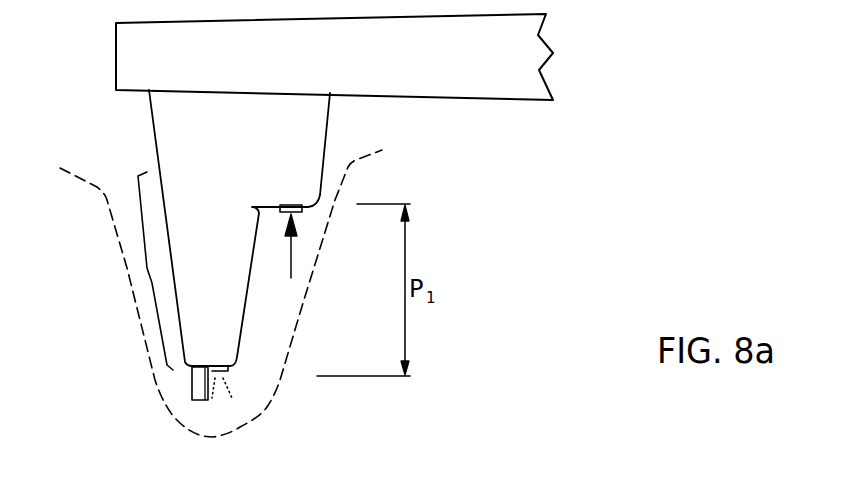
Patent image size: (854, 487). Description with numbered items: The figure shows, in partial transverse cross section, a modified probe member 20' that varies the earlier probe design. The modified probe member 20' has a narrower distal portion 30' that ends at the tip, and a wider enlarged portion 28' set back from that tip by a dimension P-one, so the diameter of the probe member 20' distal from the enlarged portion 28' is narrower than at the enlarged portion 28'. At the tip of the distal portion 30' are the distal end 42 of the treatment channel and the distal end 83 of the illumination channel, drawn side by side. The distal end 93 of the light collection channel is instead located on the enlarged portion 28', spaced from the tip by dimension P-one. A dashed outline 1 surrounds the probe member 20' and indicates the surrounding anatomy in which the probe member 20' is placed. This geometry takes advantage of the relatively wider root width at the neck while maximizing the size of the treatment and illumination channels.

The modified probe member 20' is at (171, 228).
The enlarged portion 28' is at (329, 150).
The distal portion 30' is at (109, 271).
The dashed contour 1 is at (312, 280).
The distal end of the treatment channel 42 is at (192, 378).
The distal end of the illumination channel 83 is at (228, 369).
The distal end of the light collection channel 93 is at (303, 203).